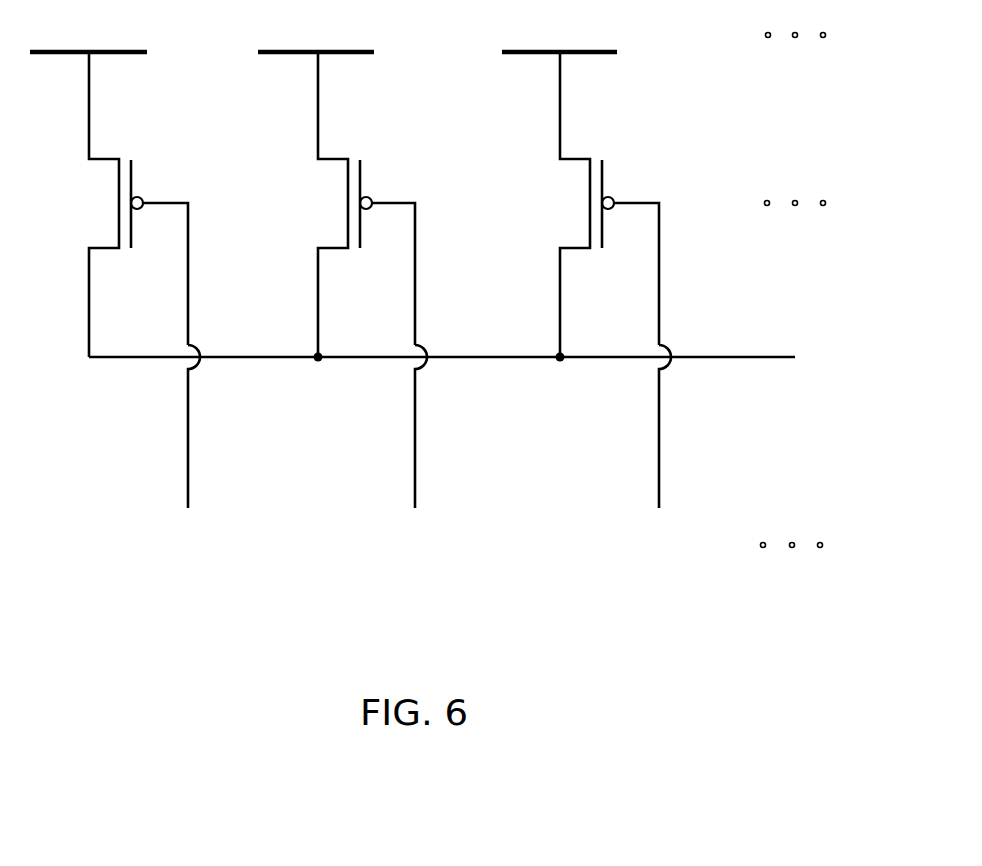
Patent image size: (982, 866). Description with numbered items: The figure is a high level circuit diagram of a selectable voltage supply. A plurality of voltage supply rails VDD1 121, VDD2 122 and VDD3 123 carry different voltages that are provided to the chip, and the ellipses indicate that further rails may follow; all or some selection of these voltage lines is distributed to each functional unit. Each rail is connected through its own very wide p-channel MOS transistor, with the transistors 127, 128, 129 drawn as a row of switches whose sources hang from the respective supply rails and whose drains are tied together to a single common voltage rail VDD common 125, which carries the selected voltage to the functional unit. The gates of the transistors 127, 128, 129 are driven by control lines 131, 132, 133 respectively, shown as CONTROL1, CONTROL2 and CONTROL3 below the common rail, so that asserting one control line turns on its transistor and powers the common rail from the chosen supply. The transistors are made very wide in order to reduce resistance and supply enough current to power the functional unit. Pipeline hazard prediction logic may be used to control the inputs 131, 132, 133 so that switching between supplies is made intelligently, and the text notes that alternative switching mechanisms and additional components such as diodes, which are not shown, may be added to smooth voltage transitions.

The voltage supply rail VDD1 121 is at (105, 55).
The voltage supply rail VDD2 122 is at (332, 55).
The voltage supply rail VDD3 123 is at (572, 55).
The common voltage rail VDD common 125 is at (725, 358).
The wide p-channel MOS transistor 127 is at (162, 167).
The wide p-channel MOS transistor 128 is at (389, 168).
The wide p-channel MOS transistor 129 is at (632, 168).
The control line 131 is at (190, 460).
The control line 132 is at (416, 465).
The control line 133 is at (660, 465).